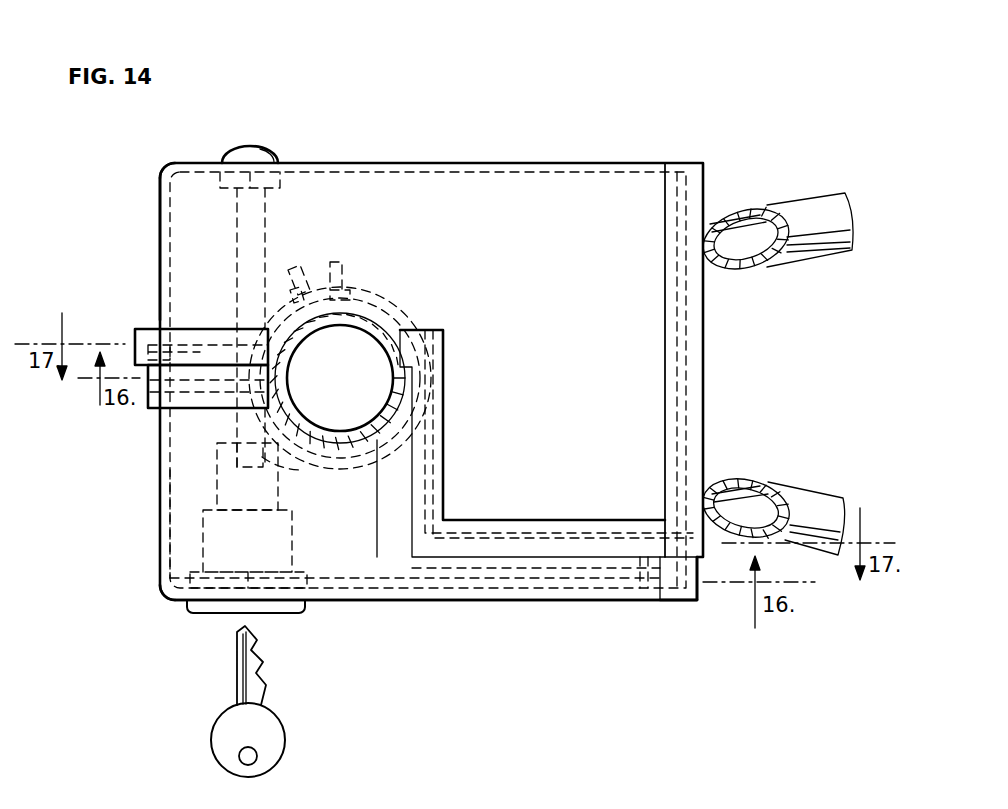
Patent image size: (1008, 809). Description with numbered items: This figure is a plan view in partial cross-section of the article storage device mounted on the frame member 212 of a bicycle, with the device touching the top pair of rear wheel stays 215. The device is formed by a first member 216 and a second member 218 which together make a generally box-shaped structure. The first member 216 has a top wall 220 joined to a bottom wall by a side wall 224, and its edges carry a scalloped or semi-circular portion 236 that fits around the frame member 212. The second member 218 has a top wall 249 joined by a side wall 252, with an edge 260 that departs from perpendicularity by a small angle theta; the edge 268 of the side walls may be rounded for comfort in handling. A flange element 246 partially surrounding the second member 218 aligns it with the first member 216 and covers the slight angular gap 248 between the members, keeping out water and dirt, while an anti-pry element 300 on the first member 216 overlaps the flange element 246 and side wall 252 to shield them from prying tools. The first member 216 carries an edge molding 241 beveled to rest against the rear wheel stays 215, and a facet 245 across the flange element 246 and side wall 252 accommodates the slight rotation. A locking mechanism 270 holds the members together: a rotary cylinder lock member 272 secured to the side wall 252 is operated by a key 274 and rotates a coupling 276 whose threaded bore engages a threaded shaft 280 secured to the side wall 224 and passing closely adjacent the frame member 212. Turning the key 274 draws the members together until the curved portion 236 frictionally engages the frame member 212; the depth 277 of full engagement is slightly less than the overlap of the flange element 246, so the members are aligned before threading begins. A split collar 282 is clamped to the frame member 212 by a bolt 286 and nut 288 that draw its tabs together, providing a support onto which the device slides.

The frame member 212 is at (290, 372).
The rear wheel stays 215 is at (800, 215).
The first member 216 is at (618, 157).
The second member 218 is at (397, 600).
The top wall 220 is at (493, 195).
The side wall 224 is at (160, 240).
The scalloped or semi-circular portion 236 is at (380, 345).
The edge molding 241 is at (695, 352).
The facet 245 is at (680, 602).
The flange element 246 is at (222, 368).
The angular gap 248 is at (517, 575).
The top wall 249 is at (178, 510).
The side wall 252 is at (158, 530).
The edge 260 is at (630, 585).
The edge 268 is at (165, 165).
The locking mechanism 270 is at (218, 607).
The rotary cylinder lock member 272 is at (275, 552).
The key 274 is at (265, 725).
The coupling 276 is at (222, 499).
The depth of full engagement 277 is at (282, 488).
The threaded shaft 280 is at (242, 262).
The split collar 282 is at (380, 305).
The bolt 286 is at (345, 282).
The nut 288 is at (292, 268).
The anti-pry element 300 is at (582, 525).